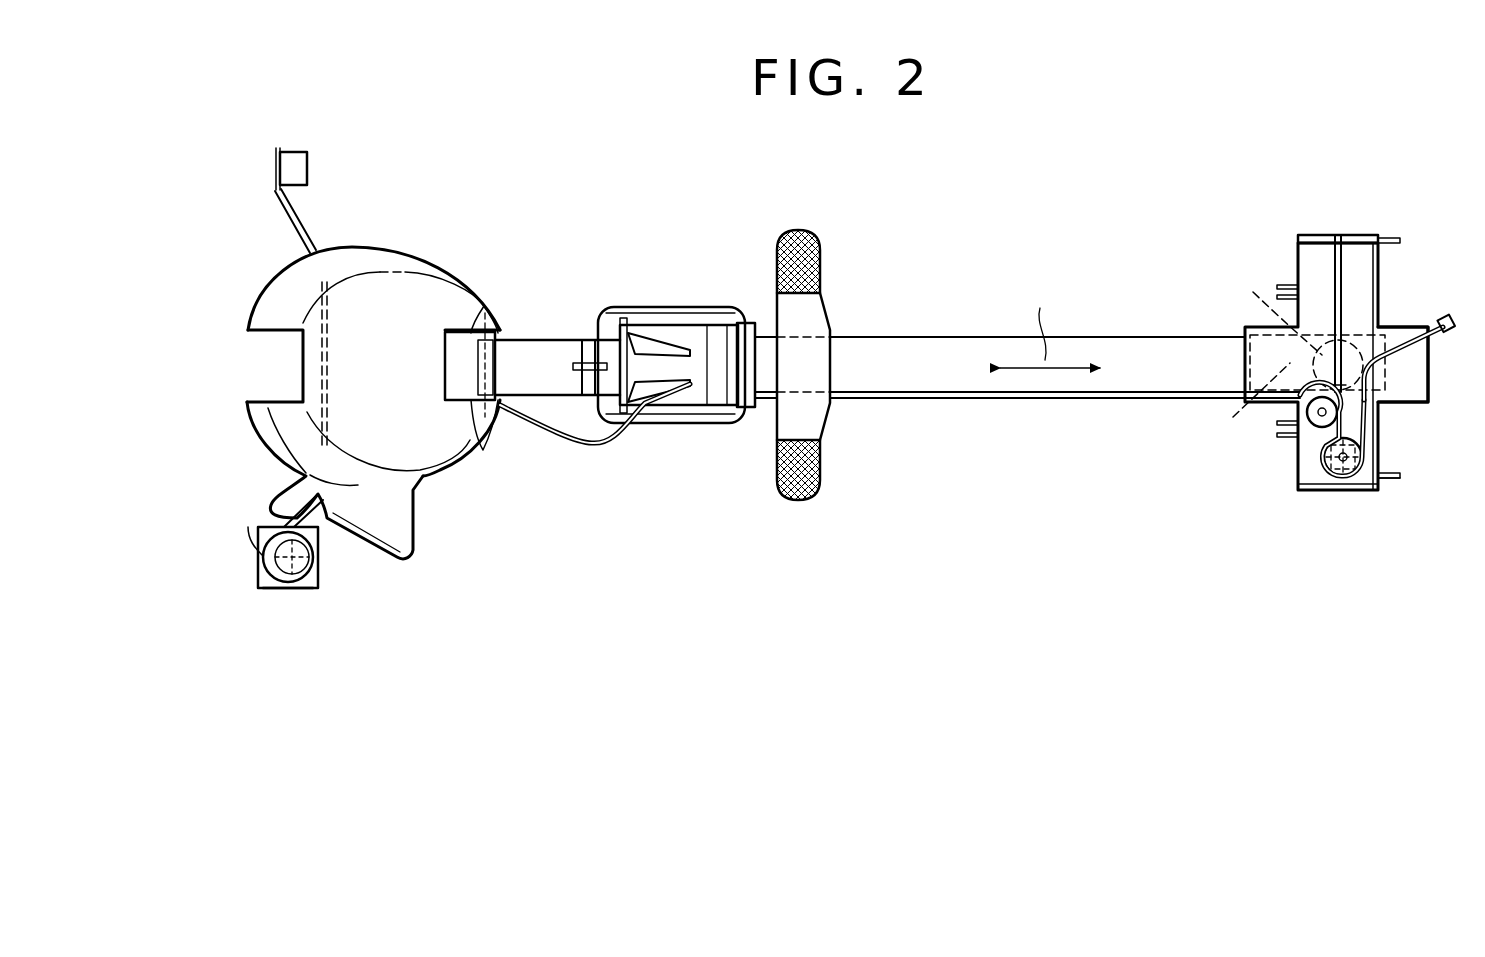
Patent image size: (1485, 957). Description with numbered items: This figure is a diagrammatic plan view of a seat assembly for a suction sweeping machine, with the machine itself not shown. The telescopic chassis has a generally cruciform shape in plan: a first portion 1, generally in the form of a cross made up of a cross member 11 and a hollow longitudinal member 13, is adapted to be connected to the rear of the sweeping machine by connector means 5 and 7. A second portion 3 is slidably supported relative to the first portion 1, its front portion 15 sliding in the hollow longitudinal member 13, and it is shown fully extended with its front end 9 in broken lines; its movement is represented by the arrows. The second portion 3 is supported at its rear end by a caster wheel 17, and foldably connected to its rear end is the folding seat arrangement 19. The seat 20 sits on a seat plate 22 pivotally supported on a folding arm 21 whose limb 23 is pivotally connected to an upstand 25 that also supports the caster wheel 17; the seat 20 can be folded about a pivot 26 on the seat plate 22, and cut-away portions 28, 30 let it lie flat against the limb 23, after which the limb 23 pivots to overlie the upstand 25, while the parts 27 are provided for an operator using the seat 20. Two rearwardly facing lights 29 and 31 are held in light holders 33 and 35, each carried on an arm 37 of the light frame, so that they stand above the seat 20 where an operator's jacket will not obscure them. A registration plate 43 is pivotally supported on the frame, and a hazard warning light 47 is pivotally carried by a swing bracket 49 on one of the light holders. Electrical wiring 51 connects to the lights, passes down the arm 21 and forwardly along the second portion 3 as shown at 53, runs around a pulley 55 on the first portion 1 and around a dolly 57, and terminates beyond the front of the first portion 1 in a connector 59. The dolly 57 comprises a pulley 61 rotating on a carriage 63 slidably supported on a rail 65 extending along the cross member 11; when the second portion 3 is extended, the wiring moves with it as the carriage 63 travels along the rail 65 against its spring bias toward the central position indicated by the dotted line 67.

The first portion 1 is at (1344, 243).
The second portion 3 is at (1130, 335).
The connector means 5 is at (1380, 236).
The connector means 7 is at (1280, 285).
The front end 9 is at (1363, 340).
The cross member 11 is at (1364, 255).
The hollow longitudinal member 13 is at (1430, 362).
The front portion 15 is at (1237, 406).
The caster wheel 17 is at (723, 424).
The seat arrangement 19 is at (422, 240).
The seat 20 is at (438, 280).
The folding arm 21 is at (560, 336).
The seat plate 22 is at (470, 368).
The limb 23 is at (567, 380).
The upstand 25 is at (660, 345).
The pivot 26 is at (483, 398).
The knob 27 is at (795, 230).
The cut-away portion 28 is at (468, 340).
The rearwardly facing light 29 is at (298, 165).
The cut-away portion 30 is at (270, 390).
The rearwardly facing light 31 is at (268, 576).
The light holder 33 is at (256, 541).
The light holder 35 is at (278, 168).
The arm 37 is at (318, 232).
The registration plate 43 is at (322, 352).
The hazard warning light 47 is at (297, 585).
The swing bracket 49 is at (250, 540).
The electrical wiring 51 is at (626, 448).
The wiring 53 is at (950, 400).
The pulley 55 is at (1318, 418).
The dolly 57 is at (1342, 482).
The connector 59 is at (1447, 316).
The pulley 61 is at (1336, 478).
The carriage 63 is at (1402, 495).
The rail 65 is at (1336, 268).
The dotted line 67 is at (1269, 304).